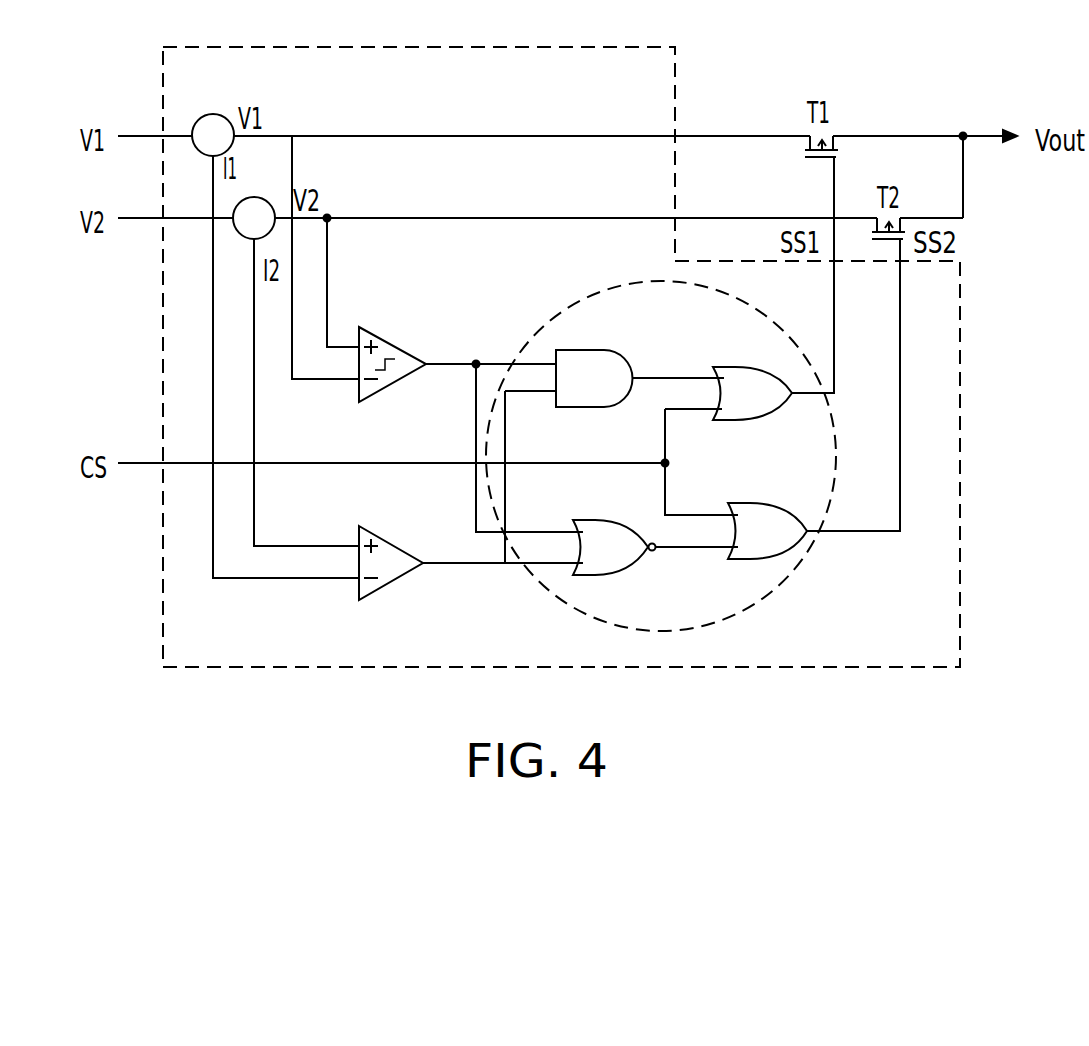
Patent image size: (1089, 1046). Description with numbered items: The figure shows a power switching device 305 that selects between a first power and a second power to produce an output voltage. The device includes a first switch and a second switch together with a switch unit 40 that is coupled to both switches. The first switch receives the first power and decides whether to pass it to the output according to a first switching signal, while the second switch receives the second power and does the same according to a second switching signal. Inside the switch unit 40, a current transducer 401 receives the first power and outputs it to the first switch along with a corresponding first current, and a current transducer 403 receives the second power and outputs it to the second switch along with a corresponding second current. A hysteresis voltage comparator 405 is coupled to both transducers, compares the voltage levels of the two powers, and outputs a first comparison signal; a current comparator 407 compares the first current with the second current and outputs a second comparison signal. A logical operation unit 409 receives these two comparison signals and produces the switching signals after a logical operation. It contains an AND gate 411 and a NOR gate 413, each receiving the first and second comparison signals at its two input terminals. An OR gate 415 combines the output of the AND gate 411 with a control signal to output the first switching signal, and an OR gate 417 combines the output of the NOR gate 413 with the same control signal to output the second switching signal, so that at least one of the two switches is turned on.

The switch unit 40 is at (960, 482).
The current transducer 401 is at (213, 114).
The current transducer 403 is at (254, 197).
The hysteresis voltage comparator 405 is at (397, 342).
The current comparator 407 is at (400, 540).
The logical operation unit 409 is at (747, 606).
The AND gate 411 is at (578, 350).
The NOR gate 413 is at (600, 520).
The OR gate 415 is at (748, 365).
The OR gate 417 is at (757, 502).
The power switching device 305 is at (1085, 733).